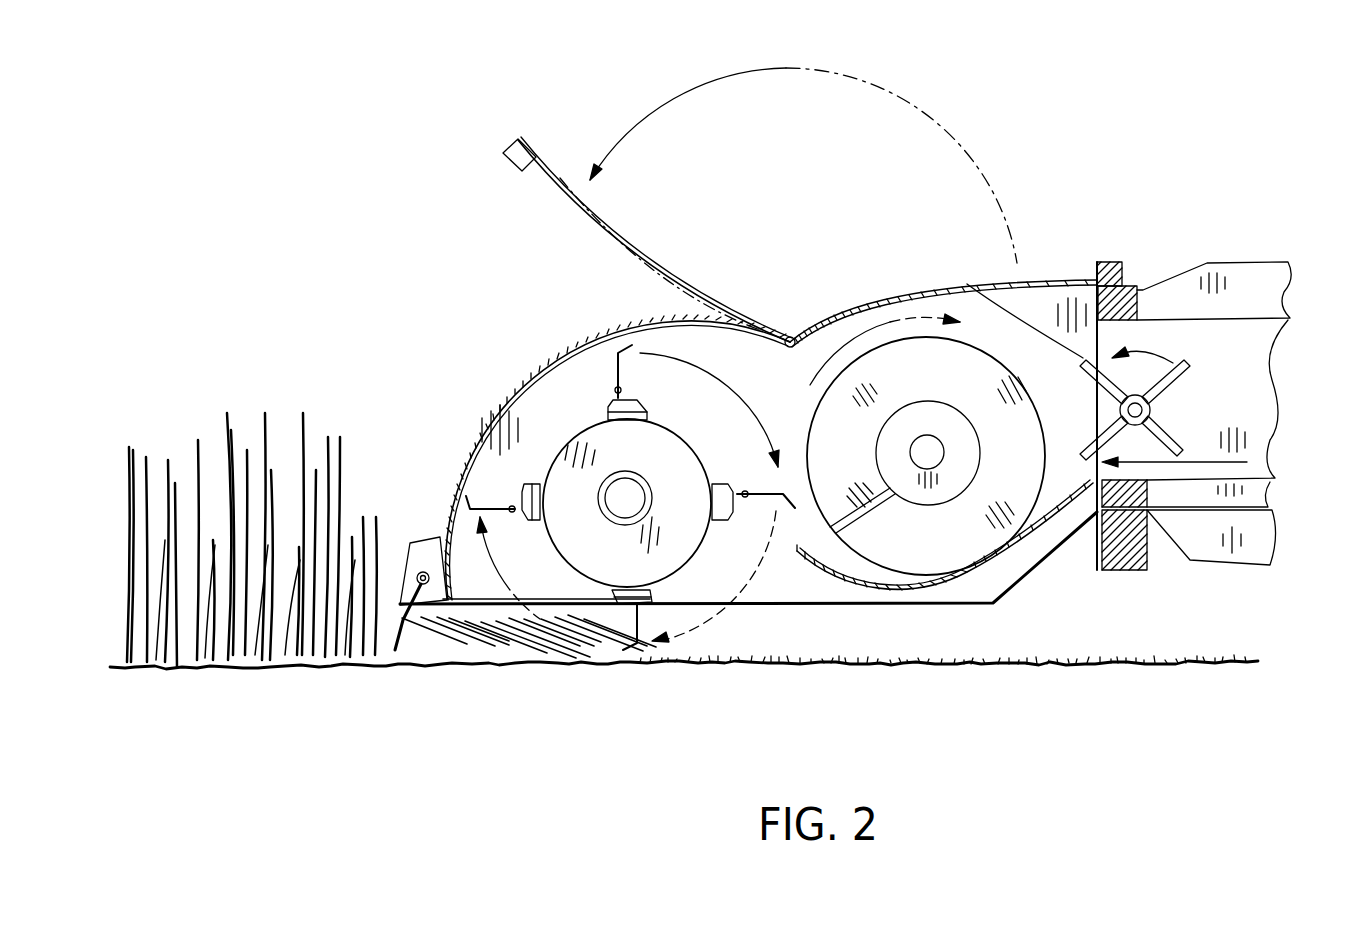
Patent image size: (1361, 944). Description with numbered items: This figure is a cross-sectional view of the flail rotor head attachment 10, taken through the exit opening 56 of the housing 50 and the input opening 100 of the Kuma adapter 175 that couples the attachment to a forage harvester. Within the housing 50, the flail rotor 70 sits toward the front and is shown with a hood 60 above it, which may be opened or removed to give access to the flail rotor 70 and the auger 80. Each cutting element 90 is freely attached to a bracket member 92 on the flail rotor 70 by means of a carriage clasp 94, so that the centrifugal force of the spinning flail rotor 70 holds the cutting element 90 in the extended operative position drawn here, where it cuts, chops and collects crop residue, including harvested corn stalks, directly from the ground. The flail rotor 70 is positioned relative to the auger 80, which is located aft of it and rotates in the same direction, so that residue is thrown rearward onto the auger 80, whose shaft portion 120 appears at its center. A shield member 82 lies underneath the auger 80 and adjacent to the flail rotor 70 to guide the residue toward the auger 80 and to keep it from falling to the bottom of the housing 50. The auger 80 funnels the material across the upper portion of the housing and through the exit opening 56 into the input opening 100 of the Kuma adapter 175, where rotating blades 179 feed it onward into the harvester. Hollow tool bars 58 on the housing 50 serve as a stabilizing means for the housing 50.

The flail rotor head attachment 10 is at (1064, 238).
The housing 50 is at (422, 468).
The exit opening 56 is at (972, 285).
The hollow tool bars 58 is at (433, 647).
The hood 60 is at (557, 173).
The flail rotor 70 is at (690, 545).
The auger 80 is at (950, 535).
The shield member 82 is at (930, 595).
The cutting element 90 is at (622, 368).
The bracket member 92 is at (645, 608).
The carriage clasp 94 is at (523, 522).
The input opening 100 is at (1245, 470).
The shaft portion 120 is at (927, 450).
The Kuma adapter 175 is at (1243, 250).
The rotating blades 179 is at (1180, 382).